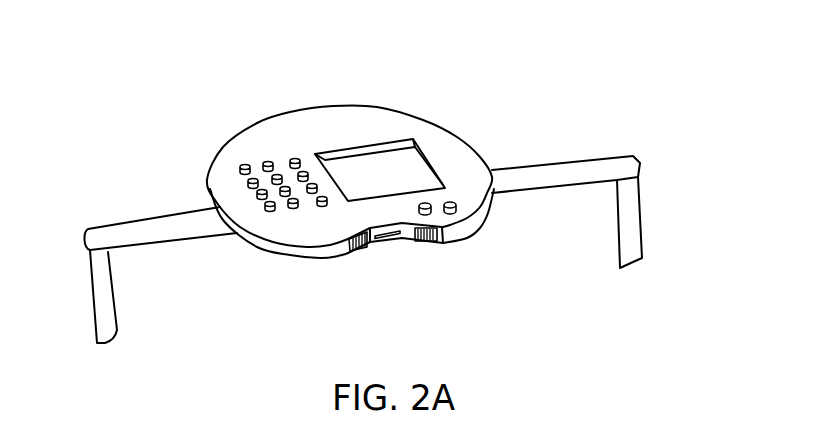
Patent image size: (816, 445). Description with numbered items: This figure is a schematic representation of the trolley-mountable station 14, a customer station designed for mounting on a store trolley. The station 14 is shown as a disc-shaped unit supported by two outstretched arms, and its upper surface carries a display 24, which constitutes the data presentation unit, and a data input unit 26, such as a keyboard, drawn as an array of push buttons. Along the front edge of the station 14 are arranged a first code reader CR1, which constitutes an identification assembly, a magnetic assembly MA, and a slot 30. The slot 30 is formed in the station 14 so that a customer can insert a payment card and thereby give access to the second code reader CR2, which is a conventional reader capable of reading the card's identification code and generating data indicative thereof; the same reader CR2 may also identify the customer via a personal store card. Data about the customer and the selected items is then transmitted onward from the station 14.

The trolley-mountable station 14 is at (248, 118).
The display 24 is at (363, 145).
The data input unit 26 is at (227, 167).
The second code reader CR2 is at (380, 221).
The first code reader CR1 is at (357, 254).
The slot 30 is at (388, 249).
The magnetic assembly MA is at (425, 251).